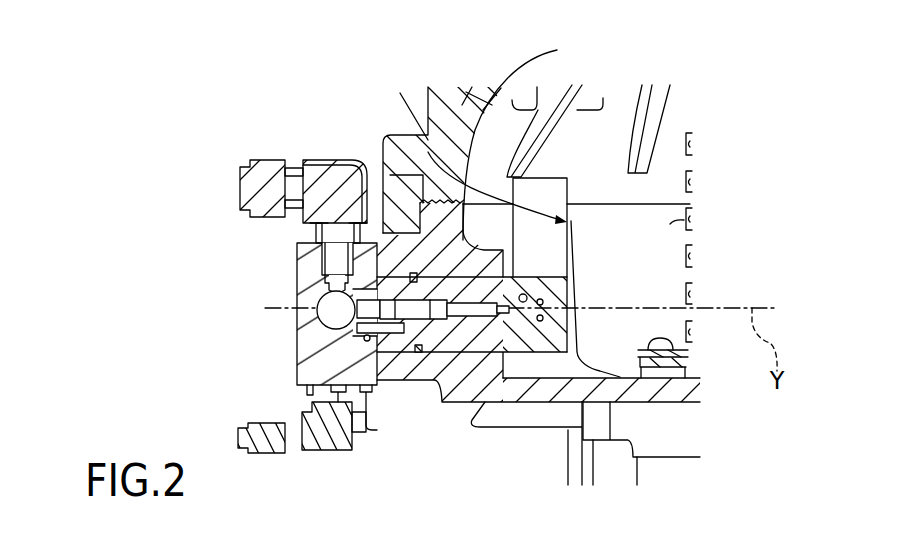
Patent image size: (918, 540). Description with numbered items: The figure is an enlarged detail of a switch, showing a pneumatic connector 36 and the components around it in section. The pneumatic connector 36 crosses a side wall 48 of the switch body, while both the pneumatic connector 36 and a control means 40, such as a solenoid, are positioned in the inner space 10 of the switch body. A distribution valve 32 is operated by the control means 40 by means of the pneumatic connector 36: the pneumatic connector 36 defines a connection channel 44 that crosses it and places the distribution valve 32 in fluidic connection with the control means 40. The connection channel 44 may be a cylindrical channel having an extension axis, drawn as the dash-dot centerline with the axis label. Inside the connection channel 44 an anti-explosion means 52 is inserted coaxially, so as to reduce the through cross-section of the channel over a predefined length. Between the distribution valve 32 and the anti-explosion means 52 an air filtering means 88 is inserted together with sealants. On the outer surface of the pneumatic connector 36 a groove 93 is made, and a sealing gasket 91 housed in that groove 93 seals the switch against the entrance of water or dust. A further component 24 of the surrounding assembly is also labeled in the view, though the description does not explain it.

The inner space 10 is at (637, 250).
The rotor disc 24 is at (470, 87).
The distribution valve 32 is at (293, 375).
The pneumatic connector 36 is at (509, 327).
The control means 40 is at (410, 275).
The connection channel 44 is at (474, 357).
The side wall 48 is at (403, 370).
The anti-explosion means 52 is at (424, 314).
The air filtering means 88 is at (320, 294).
The sealing gasket 91 is at (390, 240).
The groove 93 is at (274, 172).